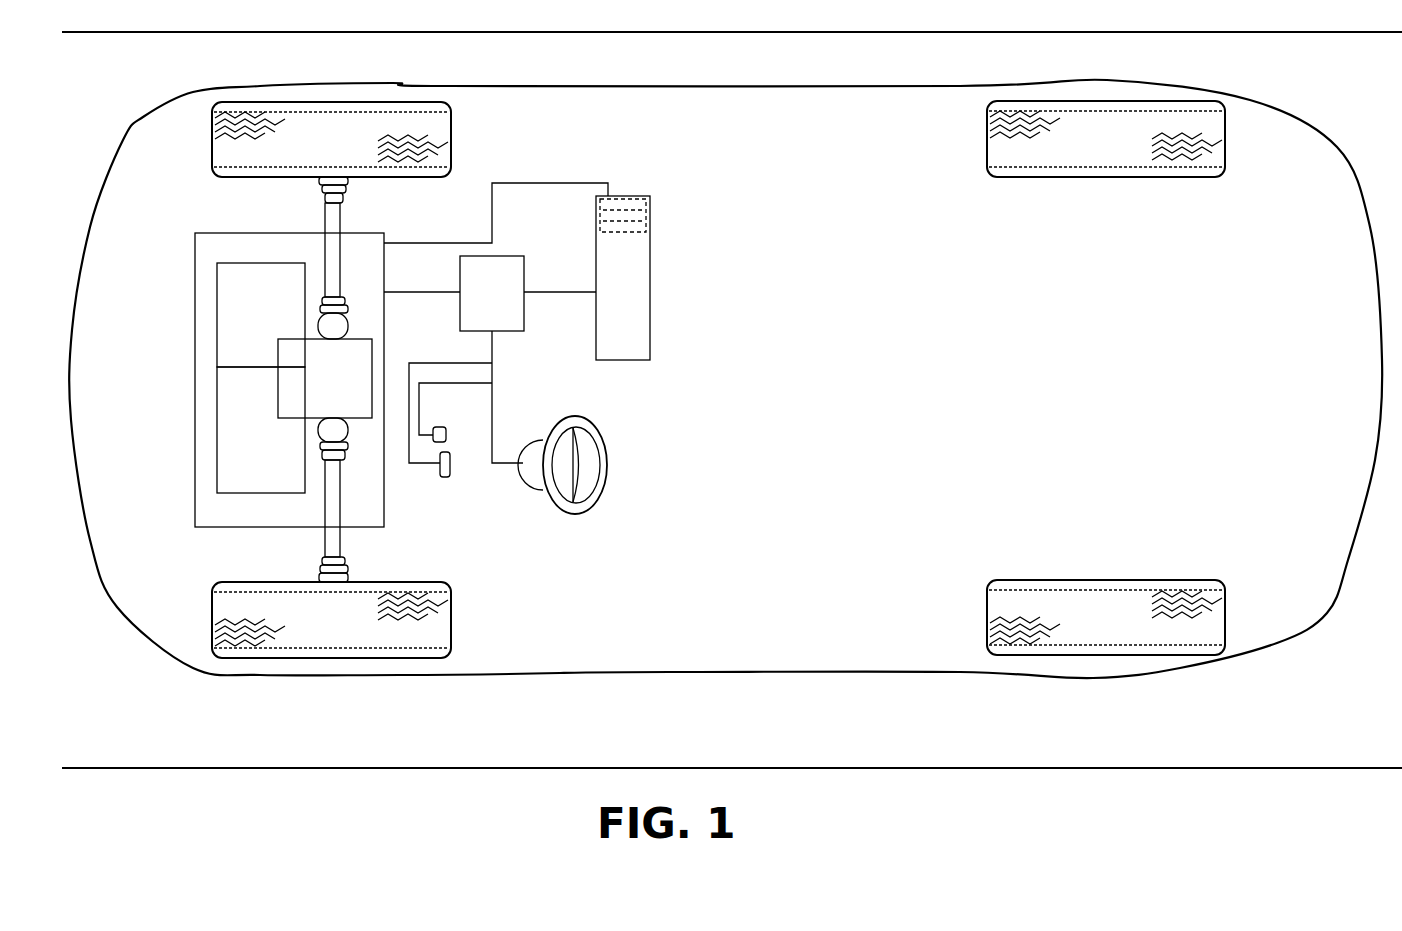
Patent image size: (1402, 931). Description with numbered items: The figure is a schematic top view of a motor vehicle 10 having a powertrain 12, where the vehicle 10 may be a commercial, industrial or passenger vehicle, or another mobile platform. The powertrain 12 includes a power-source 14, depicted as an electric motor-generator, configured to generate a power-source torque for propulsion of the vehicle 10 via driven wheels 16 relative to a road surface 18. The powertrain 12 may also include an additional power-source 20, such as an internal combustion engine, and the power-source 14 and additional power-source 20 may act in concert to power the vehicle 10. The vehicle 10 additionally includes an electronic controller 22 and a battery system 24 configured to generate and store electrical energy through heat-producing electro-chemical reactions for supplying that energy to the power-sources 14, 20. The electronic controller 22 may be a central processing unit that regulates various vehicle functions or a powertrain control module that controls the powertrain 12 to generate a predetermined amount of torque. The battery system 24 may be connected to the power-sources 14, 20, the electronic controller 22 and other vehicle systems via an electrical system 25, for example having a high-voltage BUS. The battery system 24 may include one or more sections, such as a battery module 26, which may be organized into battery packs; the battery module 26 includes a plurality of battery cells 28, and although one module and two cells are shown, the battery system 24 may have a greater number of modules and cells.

The motor vehicle 10 is at (674, 684).
The powertrain 12 is at (343, 379).
The power-source 14 is at (273, 305).
The driven wheels 16 is at (445, 135).
The road surface 18 is at (1276, 713).
The additional power-source 20 is at (273, 432).
The electronic controller 22 is at (505, 303).
The battery system 24 is at (634, 303).
The electrical system 25 is at (562, 183).
The battery module 26 is at (647, 210).
The battery cells 28 is at (625, 192).